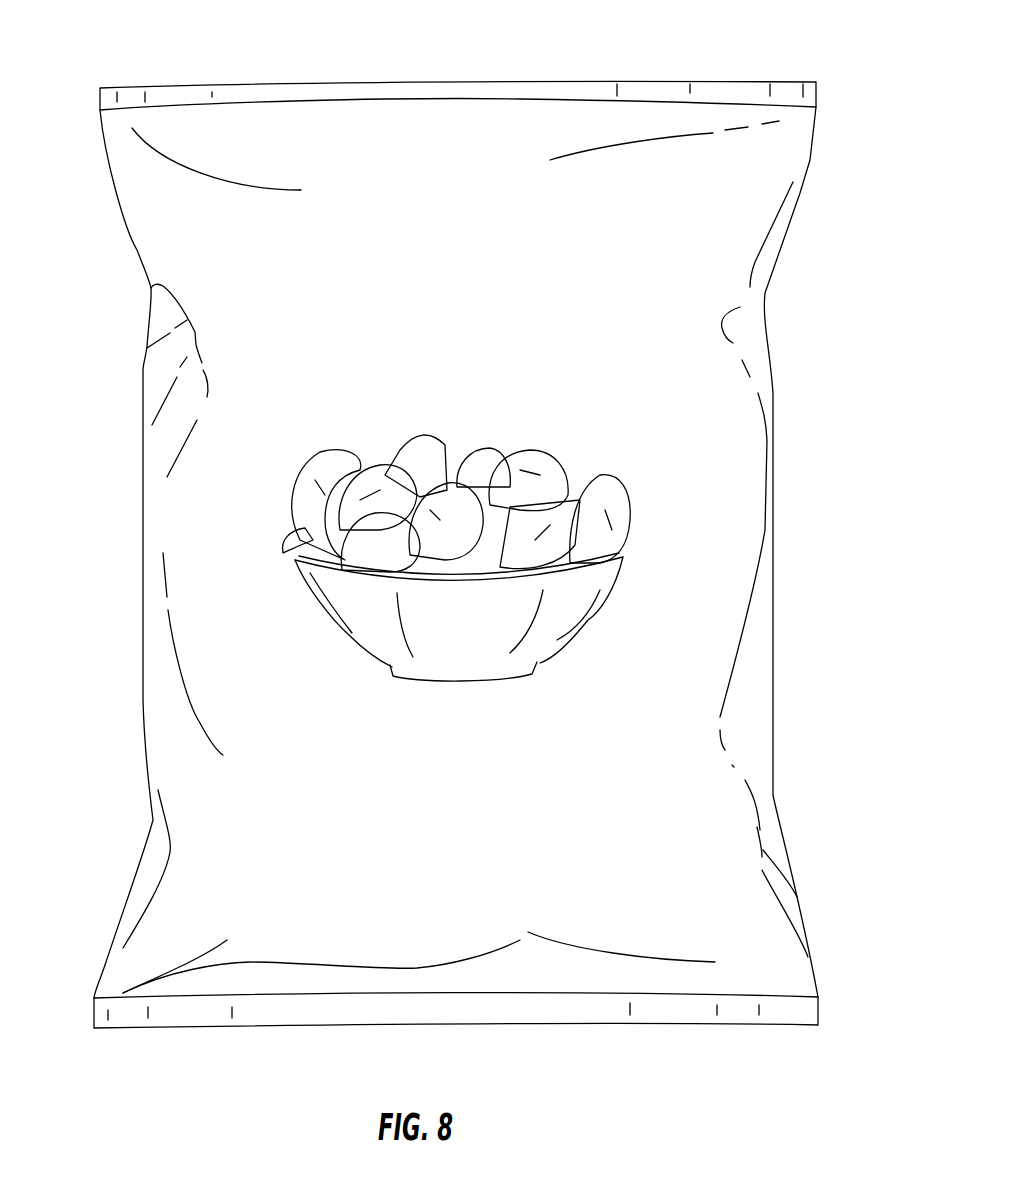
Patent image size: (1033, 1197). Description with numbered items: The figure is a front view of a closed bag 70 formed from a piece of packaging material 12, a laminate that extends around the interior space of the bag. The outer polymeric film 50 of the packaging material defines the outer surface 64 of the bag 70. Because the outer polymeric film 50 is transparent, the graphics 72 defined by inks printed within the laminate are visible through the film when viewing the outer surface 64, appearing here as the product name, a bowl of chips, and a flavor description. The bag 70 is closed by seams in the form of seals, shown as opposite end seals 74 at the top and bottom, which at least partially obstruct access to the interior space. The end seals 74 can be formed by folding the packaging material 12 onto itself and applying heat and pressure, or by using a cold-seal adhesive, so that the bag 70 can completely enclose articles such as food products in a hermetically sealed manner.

The bag 70 is at (82, 117).
The packaging material 12 is at (102, 358).
The outer surface 64 is at (190, 732).
The end seals 74 is at (608, 87).
The outer polymeric film 50 is at (233, 494).
The graphics 72 is at (665, 322).